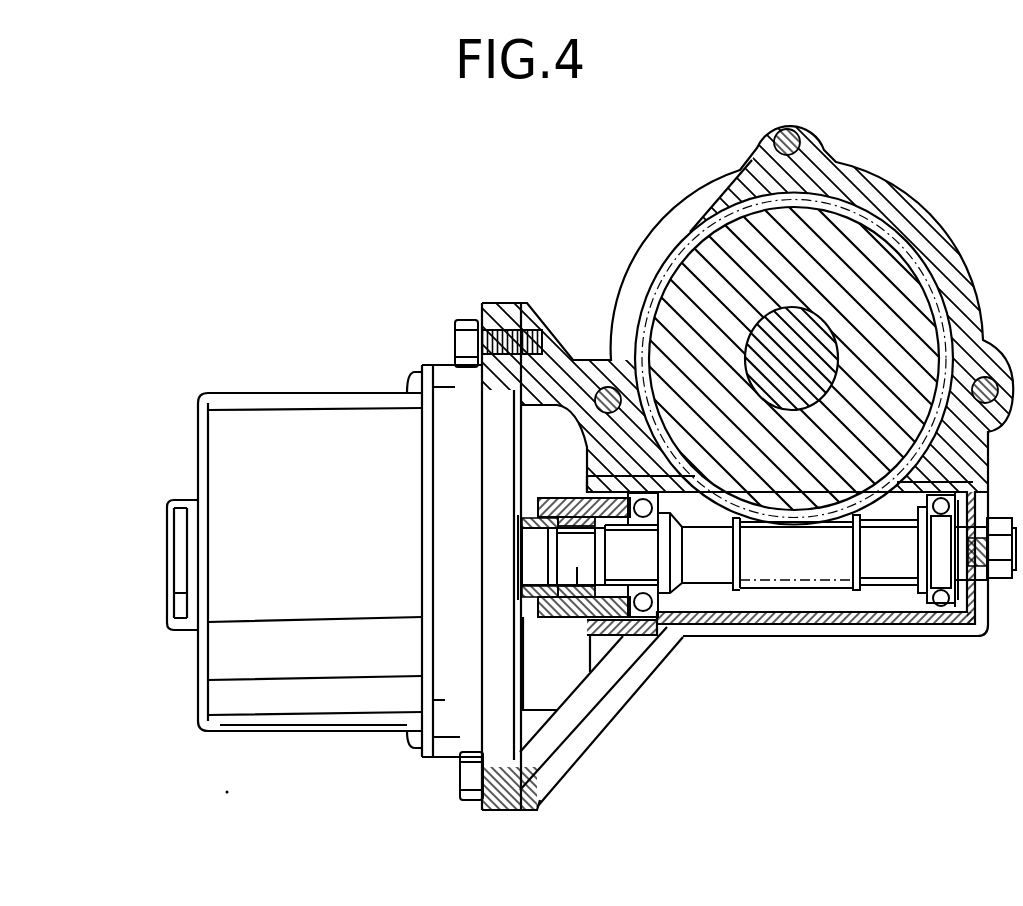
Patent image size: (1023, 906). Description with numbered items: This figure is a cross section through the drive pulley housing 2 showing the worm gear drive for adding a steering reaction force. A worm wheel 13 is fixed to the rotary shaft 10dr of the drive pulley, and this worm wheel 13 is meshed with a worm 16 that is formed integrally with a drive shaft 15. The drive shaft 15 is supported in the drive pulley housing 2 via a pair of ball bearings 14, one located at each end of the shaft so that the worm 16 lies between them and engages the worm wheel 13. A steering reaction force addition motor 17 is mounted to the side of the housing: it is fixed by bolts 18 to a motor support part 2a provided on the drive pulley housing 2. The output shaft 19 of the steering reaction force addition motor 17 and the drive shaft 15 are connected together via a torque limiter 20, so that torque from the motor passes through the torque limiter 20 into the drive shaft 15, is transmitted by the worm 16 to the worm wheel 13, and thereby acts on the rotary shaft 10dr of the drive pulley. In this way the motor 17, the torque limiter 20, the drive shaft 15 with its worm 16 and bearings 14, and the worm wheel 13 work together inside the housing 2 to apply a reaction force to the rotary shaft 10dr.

The drive pulley housing 2 is at (930, 226).
The motor support part 2a is at (566, 738).
The rotary shaft 10dr is at (818, 388).
The worm wheel 13 is at (705, 510).
The ball bearings 14 is at (642, 623).
The drive shaft 15 is at (888, 590).
The worm 16 is at (810, 590).
The steering reaction force addition motor 17 is at (323, 385).
The bolts 18 is at (456, 336).
The output shaft 19 is at (563, 614).
The torque limiter 20 is at (567, 498).